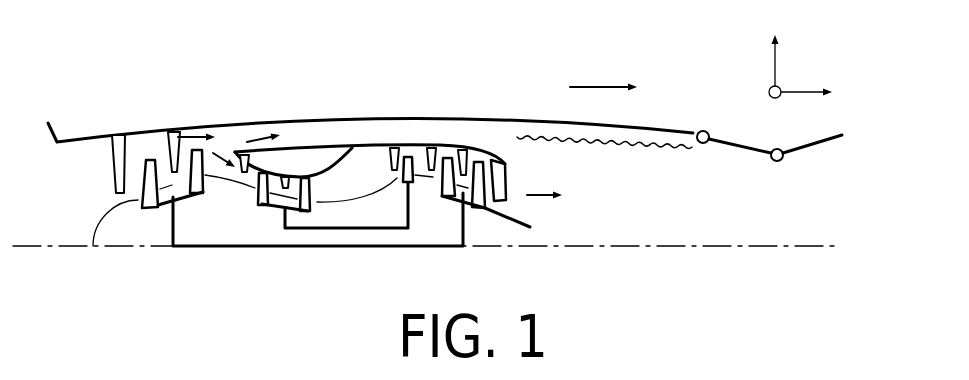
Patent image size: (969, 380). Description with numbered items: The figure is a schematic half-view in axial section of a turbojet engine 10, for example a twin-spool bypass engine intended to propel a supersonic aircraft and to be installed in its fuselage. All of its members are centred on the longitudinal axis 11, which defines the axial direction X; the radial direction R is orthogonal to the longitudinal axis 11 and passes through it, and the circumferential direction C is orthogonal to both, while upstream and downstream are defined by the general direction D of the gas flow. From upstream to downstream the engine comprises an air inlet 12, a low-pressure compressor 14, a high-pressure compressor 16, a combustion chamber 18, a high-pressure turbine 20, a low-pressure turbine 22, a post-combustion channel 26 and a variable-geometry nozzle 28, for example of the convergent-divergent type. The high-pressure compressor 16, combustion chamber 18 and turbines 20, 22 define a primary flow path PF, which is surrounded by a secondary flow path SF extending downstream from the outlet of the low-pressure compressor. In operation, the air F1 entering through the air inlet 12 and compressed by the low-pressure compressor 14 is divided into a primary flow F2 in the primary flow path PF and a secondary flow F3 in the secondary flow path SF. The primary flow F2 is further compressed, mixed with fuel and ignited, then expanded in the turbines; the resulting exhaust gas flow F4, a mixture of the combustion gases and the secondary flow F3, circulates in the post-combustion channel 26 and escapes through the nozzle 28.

The turbojet engine 10 is at (220, 92).
The longitudinal axis 11 is at (787, 247).
The air inlet 12 is at (82, 188).
The low-pressure compressor 14 is at (140, 140).
The high-pressure compressor 16 is at (277, 168).
The combustion chamber 18 is at (369, 162).
The high-pressure turbine 20 is at (422, 155).
The low-pressure turbine 22 is at (497, 163).
The post-combustion channel 26 is at (626, 199).
The variable-geometry nozzle 28 is at (734, 154).
The air F1 is at (190, 135).
The primary flow F2 is at (217, 163).
The secondary flow F3 is at (247, 142).
The exhaust gas flow F4 is at (542, 197).
The primary flow path PF is at (290, 212).
The secondary flow path SF is at (335, 145).
The general direction of the flow of gases D is at (603, 87).
The circumferential direction C is at (790, 84).
The radial direction R is at (771, 19).
The axial direction X is at (846, 92).